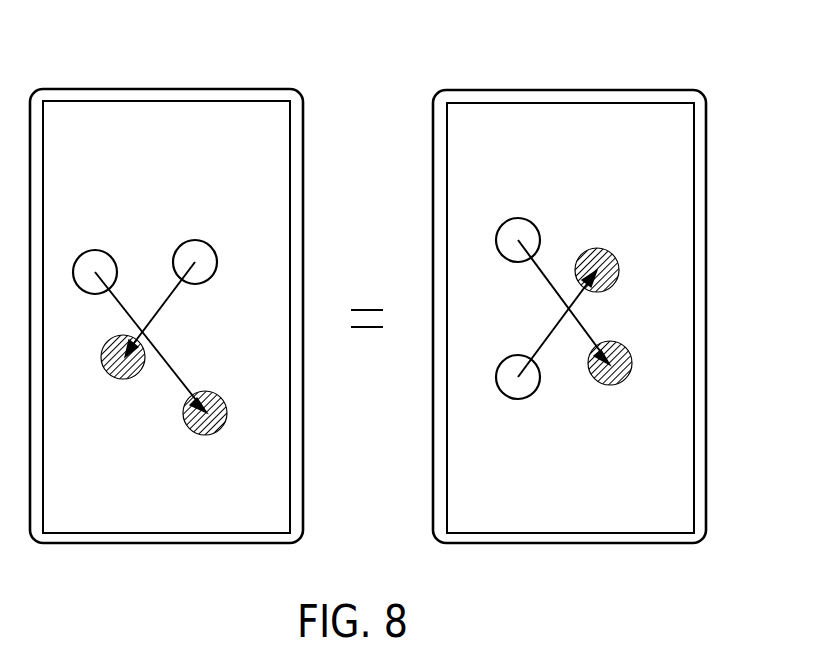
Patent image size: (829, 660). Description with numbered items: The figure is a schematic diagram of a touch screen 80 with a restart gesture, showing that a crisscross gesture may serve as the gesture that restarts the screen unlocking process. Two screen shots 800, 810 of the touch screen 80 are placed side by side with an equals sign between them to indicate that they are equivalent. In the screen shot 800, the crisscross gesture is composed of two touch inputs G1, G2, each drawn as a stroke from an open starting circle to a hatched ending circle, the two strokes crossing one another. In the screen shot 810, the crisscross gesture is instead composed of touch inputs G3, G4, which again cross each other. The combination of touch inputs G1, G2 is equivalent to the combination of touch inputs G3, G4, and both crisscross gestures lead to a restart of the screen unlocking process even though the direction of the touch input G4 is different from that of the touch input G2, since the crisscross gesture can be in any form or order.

The touch screen 80 is at (165, 543).
The screen shot 800 is at (262, 75).
The screen shot 810 is at (665, 75).
The touch input G1 is at (148, 342).
The touch input G2 is at (177, 309).
The touch input G3 is at (564, 301).
The touch input G4 is at (574, 319).